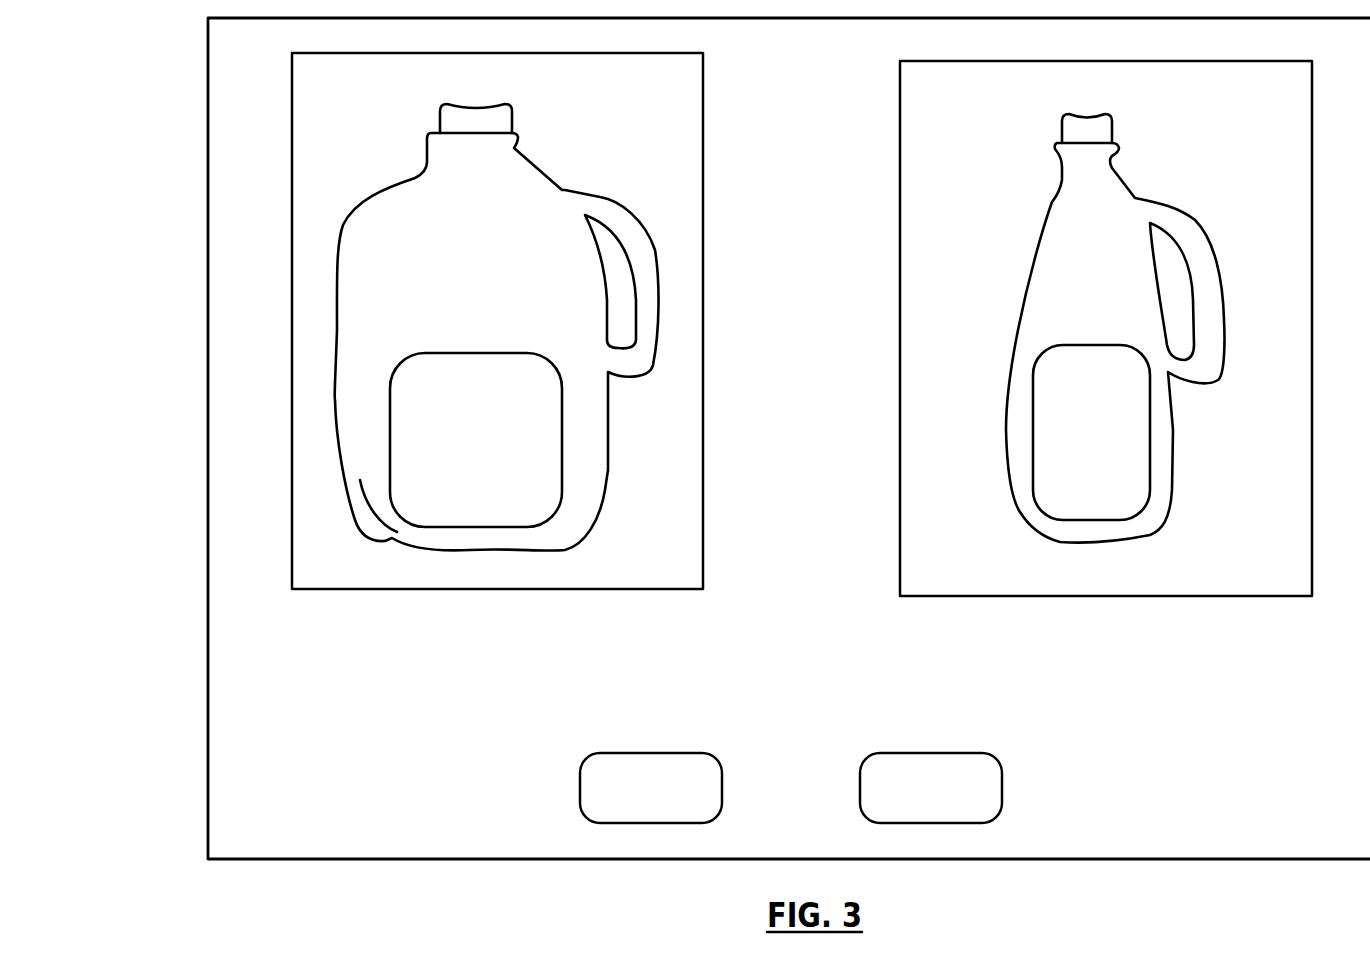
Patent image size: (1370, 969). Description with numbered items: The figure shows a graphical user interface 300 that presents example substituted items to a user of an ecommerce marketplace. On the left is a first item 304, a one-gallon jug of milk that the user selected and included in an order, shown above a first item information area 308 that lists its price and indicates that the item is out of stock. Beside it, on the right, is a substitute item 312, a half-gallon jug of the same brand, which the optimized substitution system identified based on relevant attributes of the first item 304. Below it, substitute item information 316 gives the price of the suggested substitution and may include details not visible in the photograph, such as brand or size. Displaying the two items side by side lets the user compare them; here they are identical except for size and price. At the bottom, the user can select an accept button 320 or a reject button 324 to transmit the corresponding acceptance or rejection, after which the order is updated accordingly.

The graphical user interface 300 is at (208, 108).
The first item 304 is at (292, 188).
The first item information area 308 is at (350, 644).
The substitute item 312 is at (900, 175).
The substitute item information 316 is at (928, 644).
The accept button 320 is at (580, 790).
The reject button 324 is at (860, 790).